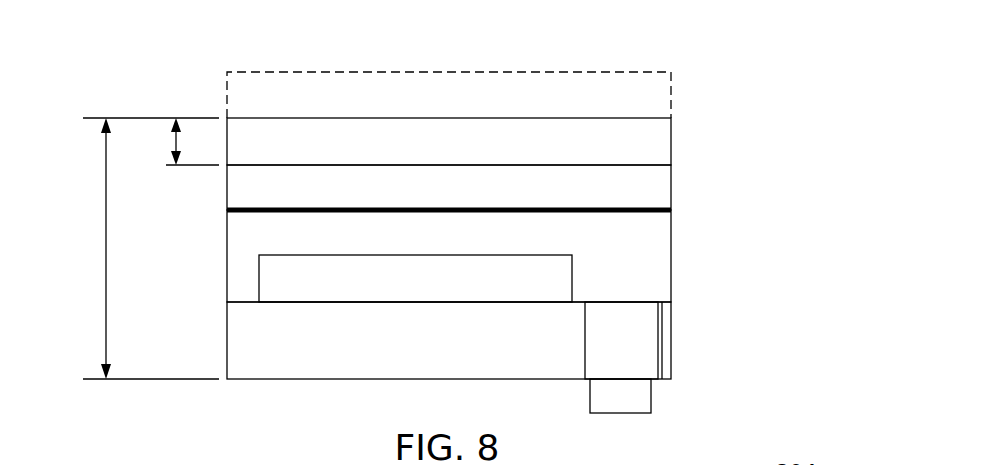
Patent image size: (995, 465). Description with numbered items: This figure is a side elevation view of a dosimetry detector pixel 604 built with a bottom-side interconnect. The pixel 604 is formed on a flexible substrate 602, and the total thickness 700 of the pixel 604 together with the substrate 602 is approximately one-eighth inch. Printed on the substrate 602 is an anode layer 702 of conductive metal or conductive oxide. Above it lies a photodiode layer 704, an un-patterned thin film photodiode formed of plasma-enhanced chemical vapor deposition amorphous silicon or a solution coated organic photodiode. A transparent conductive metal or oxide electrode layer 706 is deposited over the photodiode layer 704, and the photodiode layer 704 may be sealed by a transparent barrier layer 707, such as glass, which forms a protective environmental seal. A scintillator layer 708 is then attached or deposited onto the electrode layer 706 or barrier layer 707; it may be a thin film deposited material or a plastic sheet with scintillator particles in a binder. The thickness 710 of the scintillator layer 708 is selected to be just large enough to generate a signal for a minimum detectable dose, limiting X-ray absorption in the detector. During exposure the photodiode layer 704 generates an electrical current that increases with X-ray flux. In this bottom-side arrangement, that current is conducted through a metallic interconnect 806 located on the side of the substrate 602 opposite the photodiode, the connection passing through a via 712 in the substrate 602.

The pixel 604 is at (694, 68).
The scintillator layer 708 is at (672, 142).
The electrode layer 706 is at (672, 188).
The barrier layer 707 is at (226, 210).
The photodiode layer 704 is at (672, 228).
The anode layer 702 is at (258, 279).
The flexible substrate 602 is at (226, 347).
The via 712 is at (663, 341).
The metallic interconnect 806 is at (652, 396).
The total thickness 700 is at (106, 330).
The thickness of scintillator layer 710 is at (176, 142).